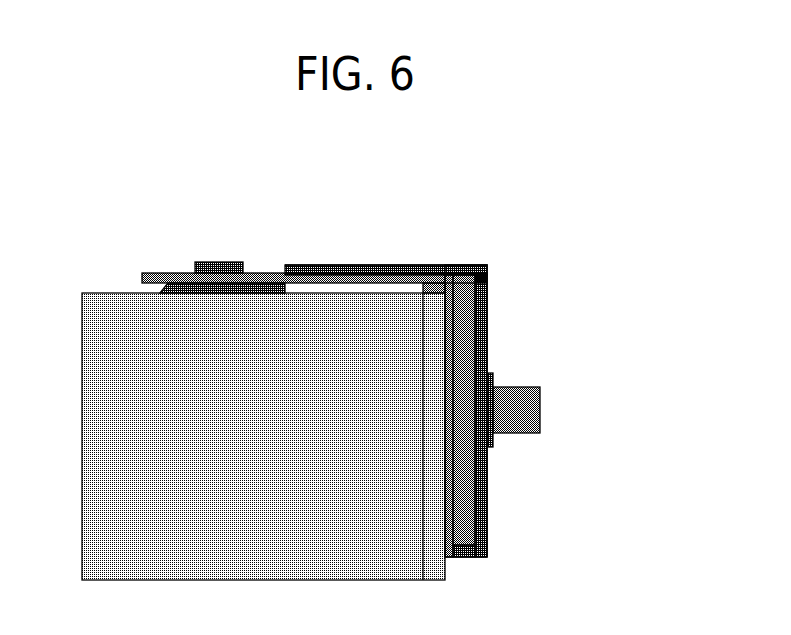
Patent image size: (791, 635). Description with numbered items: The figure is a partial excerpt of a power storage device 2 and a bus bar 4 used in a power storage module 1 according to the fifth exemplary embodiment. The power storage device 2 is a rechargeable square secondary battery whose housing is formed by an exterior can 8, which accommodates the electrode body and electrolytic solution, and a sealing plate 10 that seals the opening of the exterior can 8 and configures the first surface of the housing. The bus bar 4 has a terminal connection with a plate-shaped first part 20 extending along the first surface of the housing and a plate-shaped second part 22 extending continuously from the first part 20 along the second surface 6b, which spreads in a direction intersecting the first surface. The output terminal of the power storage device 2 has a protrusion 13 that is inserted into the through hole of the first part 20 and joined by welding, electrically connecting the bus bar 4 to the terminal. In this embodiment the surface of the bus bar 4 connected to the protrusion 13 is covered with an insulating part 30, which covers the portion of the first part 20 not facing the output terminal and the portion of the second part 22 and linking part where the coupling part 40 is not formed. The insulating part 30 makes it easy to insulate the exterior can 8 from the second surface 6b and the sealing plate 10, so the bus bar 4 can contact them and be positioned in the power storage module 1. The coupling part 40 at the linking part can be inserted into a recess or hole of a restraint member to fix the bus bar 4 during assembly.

The power storage module 1 is at (618, 185).
The power storage device 2 is at (93, 292).
The bus bar 4 is at (486, 458).
The second surface 6b is at (486, 478).
The exterior can 8 is at (110, 408).
The sealing plate 10 is at (487, 283).
The protrusion 13 is at (233, 262).
The first part 20 is at (380, 265).
The second part 22 is at (486, 348).
The insulating part 30 is at (452, 265).
The coupling part 40 is at (542, 413).